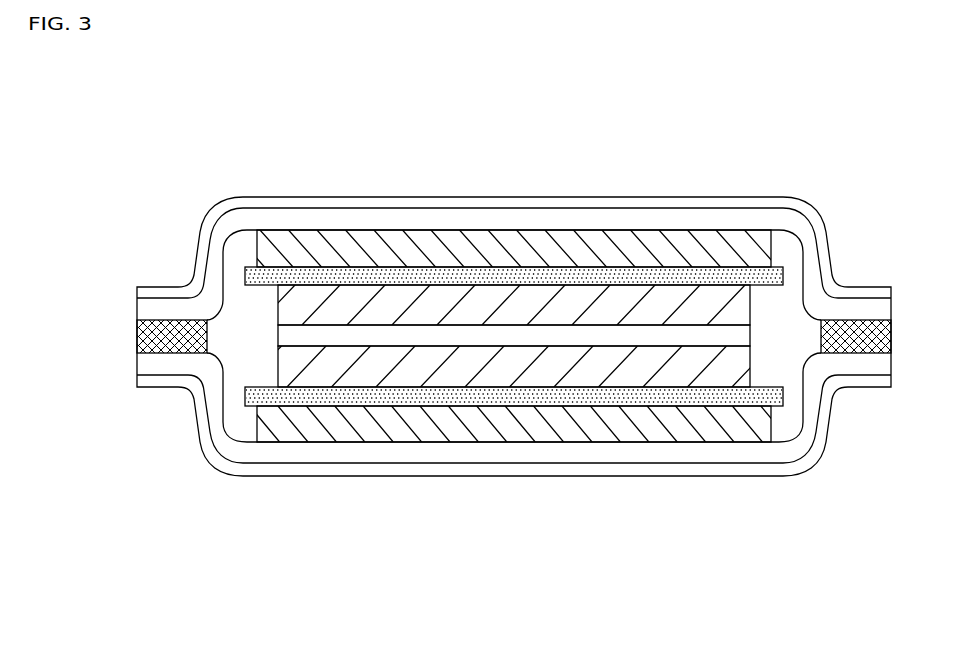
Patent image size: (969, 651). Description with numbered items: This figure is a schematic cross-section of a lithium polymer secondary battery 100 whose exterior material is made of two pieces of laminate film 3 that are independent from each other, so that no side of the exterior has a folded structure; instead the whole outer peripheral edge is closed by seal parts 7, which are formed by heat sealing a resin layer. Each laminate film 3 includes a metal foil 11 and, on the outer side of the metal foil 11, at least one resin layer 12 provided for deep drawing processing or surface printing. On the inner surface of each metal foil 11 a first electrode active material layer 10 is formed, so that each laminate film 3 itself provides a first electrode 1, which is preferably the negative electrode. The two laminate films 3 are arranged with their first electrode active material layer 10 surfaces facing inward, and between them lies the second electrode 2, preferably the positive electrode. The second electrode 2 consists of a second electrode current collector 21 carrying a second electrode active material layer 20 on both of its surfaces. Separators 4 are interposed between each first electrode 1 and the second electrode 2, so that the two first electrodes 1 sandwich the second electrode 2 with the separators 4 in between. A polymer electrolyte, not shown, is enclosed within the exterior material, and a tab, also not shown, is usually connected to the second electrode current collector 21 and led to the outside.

The secondary battery 100 is at (648, 156).
The first electrode 1 is at (567, 77).
The second electrode 2 is at (90, 407).
The laminate film 3 is at (562, 72).
The separator 4 is at (380, 275).
The seal part 7 is at (137, 333).
The first electrode active material layer 10 is at (512, 240).
The metal foil 11 is at (480, 220).
The resin layer 12 is at (447, 202).
The second electrode active material layer 20 is at (278, 308).
The second electrode current collector 21 is at (278, 337).